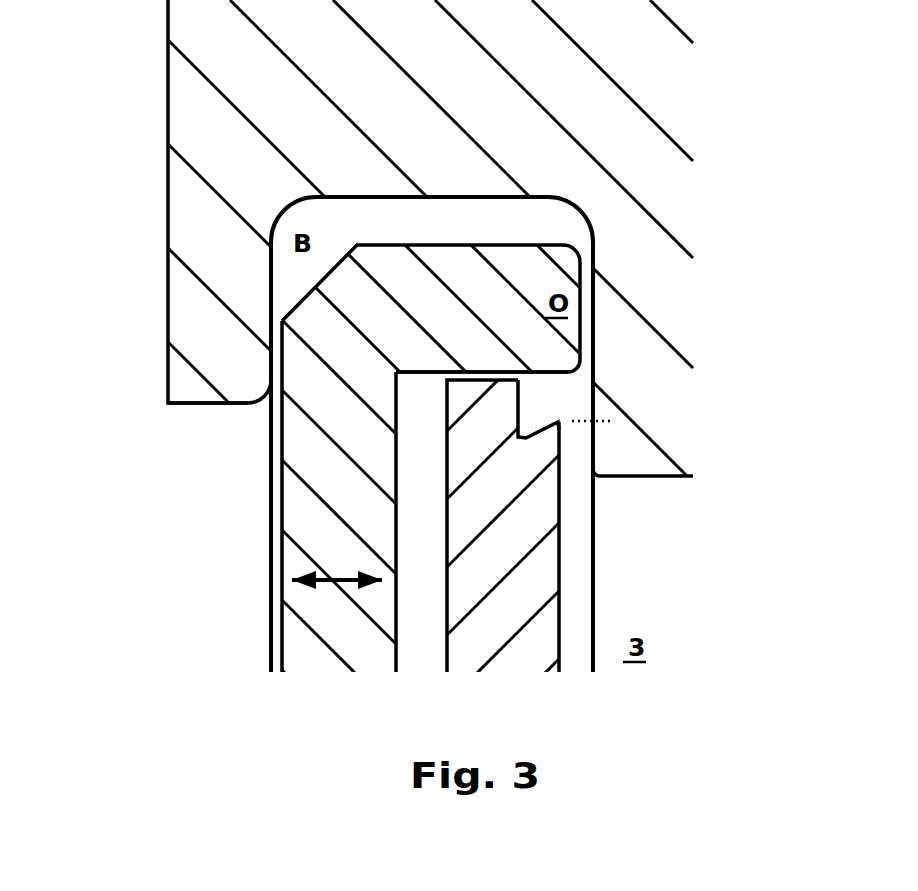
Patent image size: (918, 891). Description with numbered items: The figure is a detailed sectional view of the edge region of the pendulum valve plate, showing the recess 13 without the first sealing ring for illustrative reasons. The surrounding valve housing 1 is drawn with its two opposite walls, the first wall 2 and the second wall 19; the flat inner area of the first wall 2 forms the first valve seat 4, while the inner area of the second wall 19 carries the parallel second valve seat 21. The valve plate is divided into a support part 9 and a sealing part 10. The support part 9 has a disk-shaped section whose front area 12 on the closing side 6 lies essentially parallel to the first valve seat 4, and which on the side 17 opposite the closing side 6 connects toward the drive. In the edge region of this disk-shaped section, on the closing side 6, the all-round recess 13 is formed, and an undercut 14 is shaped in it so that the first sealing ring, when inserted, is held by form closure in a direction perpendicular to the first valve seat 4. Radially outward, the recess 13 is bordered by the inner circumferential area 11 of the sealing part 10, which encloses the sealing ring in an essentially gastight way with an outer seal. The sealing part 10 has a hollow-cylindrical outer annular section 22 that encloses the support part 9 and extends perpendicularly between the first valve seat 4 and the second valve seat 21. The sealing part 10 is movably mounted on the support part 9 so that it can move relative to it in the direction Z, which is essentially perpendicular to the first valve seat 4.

The valve housing 1 is at (600, 128).
The first wall 2 is at (640, 345).
The first valve seat 4 is at (600, 405).
The closing side 6 is at (711, 588).
The support part 9 is at (500, 481).
The sealing part 10 is at (335, 490).
The inner circumferential area 11 is at (535, 368).
The front area 12 is at (562, 510).
The recess 13 is at (545, 400).
The undercut 14 is at (530, 424).
The side opposite to the closing side 17 is at (171, 580).
The second wall 19 is at (212, 333).
The second valve seat 21 is at (268, 358).
The outer annular section 22 is at (487, 290).
The direction Z is at (292, 588).